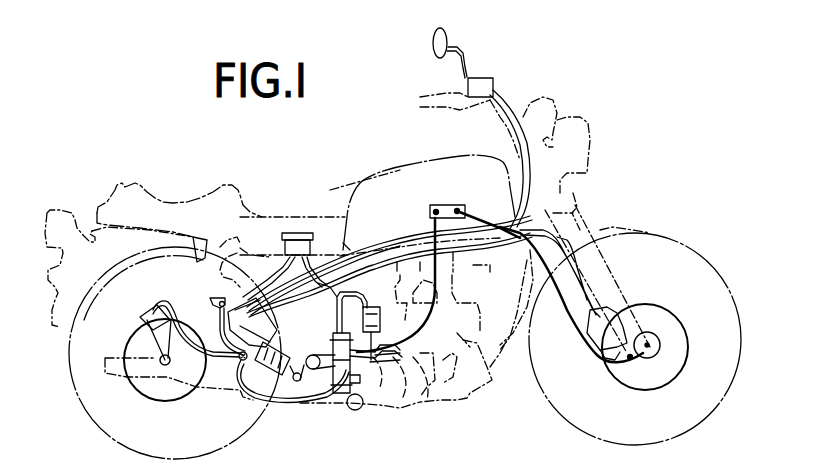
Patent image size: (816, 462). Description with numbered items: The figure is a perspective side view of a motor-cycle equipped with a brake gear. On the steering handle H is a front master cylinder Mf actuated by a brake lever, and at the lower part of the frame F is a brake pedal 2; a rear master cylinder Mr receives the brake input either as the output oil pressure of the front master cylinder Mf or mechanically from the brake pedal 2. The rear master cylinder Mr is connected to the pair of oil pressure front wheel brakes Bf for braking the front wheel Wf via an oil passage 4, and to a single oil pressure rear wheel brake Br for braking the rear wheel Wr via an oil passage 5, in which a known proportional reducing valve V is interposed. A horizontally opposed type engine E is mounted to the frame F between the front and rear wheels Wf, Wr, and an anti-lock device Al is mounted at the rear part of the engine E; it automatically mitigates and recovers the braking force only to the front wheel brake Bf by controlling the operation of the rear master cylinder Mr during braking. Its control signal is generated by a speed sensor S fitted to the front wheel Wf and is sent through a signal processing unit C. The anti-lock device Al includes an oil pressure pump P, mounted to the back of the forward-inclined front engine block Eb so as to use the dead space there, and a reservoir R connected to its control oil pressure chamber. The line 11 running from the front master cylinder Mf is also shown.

The frame F is at (192, 240).
The reservoir R is at (297, 233).
The signal processing unit C is at (450, 205).
The engine E is at (454, 294).
The front engine block Eb is at (455, 345).
The oil pressure pump P is at (380, 312).
The brake pedal 2 is at (372, 362).
The anti-lock device Al is at (339, 385).
The rear master cylinder Mr is at (257, 385).
The proportional reducing valve V is at (232, 377).
The rear wheel brake Br is at (153, 312).
The oil passage 5 is at (189, 323).
The rear wheel Wr is at (72, 378).
The front wheel Wf is at (733, 310).
The front wheel brake Bf is at (610, 317).
The speed sensor S is at (637, 363).
The steering handle H is at (427, 97).
The front master cylinder Mf is at (480, 78).
The front brake hose 11 is at (529, 167).
The oil passage 4 is at (575, 265).